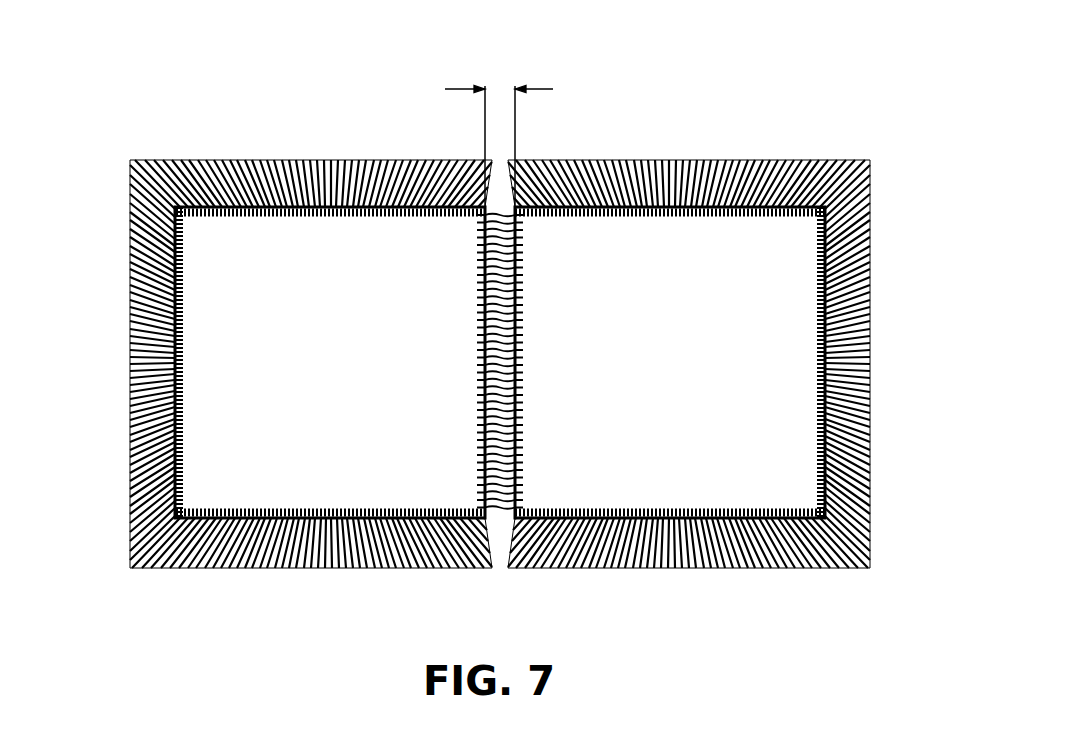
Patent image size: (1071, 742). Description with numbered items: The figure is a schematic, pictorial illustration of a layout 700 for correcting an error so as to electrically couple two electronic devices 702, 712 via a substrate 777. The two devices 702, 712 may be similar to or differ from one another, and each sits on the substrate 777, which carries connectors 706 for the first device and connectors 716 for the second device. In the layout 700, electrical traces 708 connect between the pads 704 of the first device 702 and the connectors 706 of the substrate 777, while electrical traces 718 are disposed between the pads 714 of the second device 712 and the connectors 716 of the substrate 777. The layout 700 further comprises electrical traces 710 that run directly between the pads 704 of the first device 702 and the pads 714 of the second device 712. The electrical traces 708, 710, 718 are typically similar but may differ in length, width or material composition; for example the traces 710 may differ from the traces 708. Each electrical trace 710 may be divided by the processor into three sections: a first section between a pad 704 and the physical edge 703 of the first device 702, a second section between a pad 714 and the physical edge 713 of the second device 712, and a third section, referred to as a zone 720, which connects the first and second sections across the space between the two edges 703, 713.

The layout 700 is at (129, 129).
The electronic device 702 is at (308, 367).
The physical edge 703 is at (487, 530).
The pads 704 is at (480, 214).
The connectors 706 is at (232, 157).
The electrical traces 708 is at (378, 172).
The electrical traces 710 is at (488, 330).
The electronic device 712 is at (654, 367).
The physical edge 713 is at (513, 530).
The pads 714 is at (520, 250).
The connectors 716 is at (738, 162).
The electrical traces 718 is at (634, 178).
The zone 720 is at (503, 88).
The substrate 777 is at (888, 129).